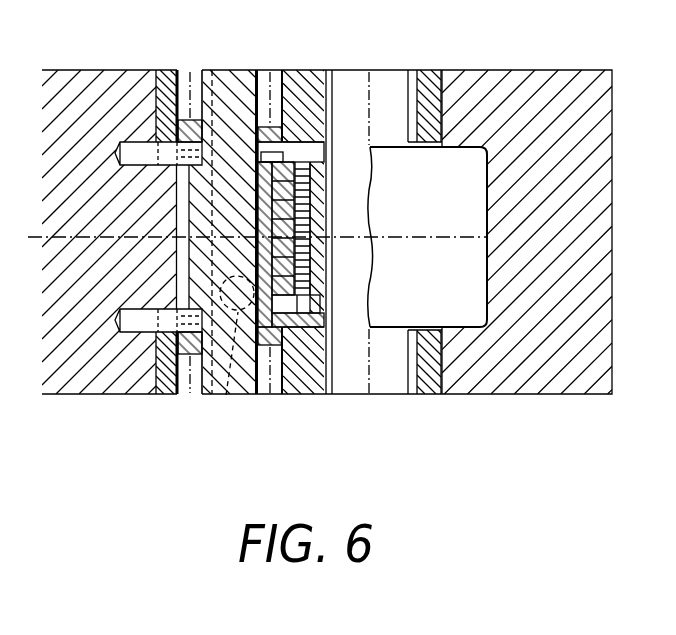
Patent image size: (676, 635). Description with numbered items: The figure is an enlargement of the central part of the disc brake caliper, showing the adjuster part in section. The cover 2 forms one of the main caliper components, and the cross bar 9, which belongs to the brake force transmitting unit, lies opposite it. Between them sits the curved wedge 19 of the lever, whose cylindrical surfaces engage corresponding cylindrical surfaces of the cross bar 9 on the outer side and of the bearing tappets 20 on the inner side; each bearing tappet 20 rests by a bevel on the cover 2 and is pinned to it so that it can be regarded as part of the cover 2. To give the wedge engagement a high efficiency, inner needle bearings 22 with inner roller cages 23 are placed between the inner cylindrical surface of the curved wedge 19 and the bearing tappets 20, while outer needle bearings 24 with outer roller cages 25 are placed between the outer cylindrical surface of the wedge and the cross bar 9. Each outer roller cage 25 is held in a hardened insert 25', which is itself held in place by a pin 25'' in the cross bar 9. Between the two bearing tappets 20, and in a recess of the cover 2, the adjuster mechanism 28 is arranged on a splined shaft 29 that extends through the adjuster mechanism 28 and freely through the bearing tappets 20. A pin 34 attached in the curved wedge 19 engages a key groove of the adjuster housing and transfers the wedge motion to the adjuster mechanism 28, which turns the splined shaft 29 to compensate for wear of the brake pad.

The cover 2 is at (570, 72).
The cross bar 9 is at (76, 88).
The curved wedge 19 is at (244, 72).
The bearing tappets 20 is at (384, 70).
The inner needle bearings 22 is at (292, 68).
The inner roller cages 23 is at (328, 68).
The outer needle bearings 24 is at (203, 66).
The outer roller cages 25 is at (179, 243).
The hardened insert 25' is at (141, 235).
The pin 25'' is at (99, 242).
The adjuster mechanism 28 is at (465, 312).
The splined shaft 29 is at (434, 72).
The pin 34 is at (226, 395).